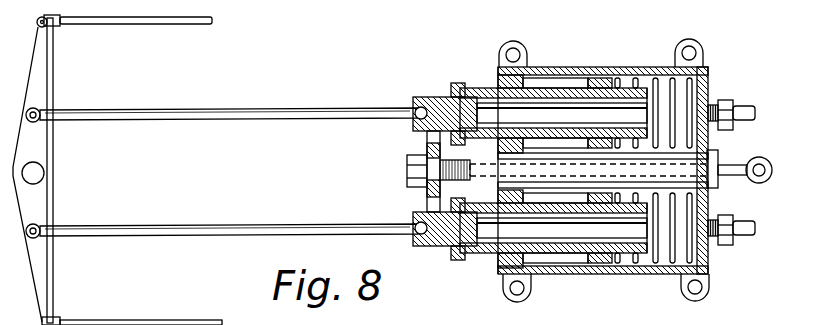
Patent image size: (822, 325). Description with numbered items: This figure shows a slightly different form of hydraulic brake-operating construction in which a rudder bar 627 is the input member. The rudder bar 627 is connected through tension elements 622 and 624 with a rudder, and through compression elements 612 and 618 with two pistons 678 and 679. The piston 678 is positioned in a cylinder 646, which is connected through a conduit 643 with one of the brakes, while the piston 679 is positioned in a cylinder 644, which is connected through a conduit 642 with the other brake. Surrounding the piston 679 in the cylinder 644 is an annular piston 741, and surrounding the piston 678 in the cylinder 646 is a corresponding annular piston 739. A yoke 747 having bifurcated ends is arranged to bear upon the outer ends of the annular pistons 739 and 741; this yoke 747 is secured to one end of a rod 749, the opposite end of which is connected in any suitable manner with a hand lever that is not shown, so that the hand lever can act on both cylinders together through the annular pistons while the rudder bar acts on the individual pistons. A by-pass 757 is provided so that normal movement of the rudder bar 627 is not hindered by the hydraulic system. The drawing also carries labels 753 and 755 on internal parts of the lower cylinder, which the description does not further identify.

The compression element 612 is at (152, 229).
The compression element 618 is at (153, 121).
The tension element 622 is at (160, 25).
The tension element 624 is at (147, 323).
The rudder bar 627 is at (42, 72).
The conduit 642 is at (760, 92).
The conduit 643 is at (745, 235).
The cylinder 644 is at (650, 68).
The cylinder 646 is at (630, 276).
The piston 678 is at (510, 276).
The piston 679 is at (566, 97).
The annular piston 739 is at (492, 254).
The annular piston 741 is at (548, 90).
The yoke 747 is at (432, 150).
The rod 749 is at (728, 170).
The lower seal 753 is at (566, 272).
The lower piston rod 755 is at (580, 270).
The by-pass 757 is at (640, 266).